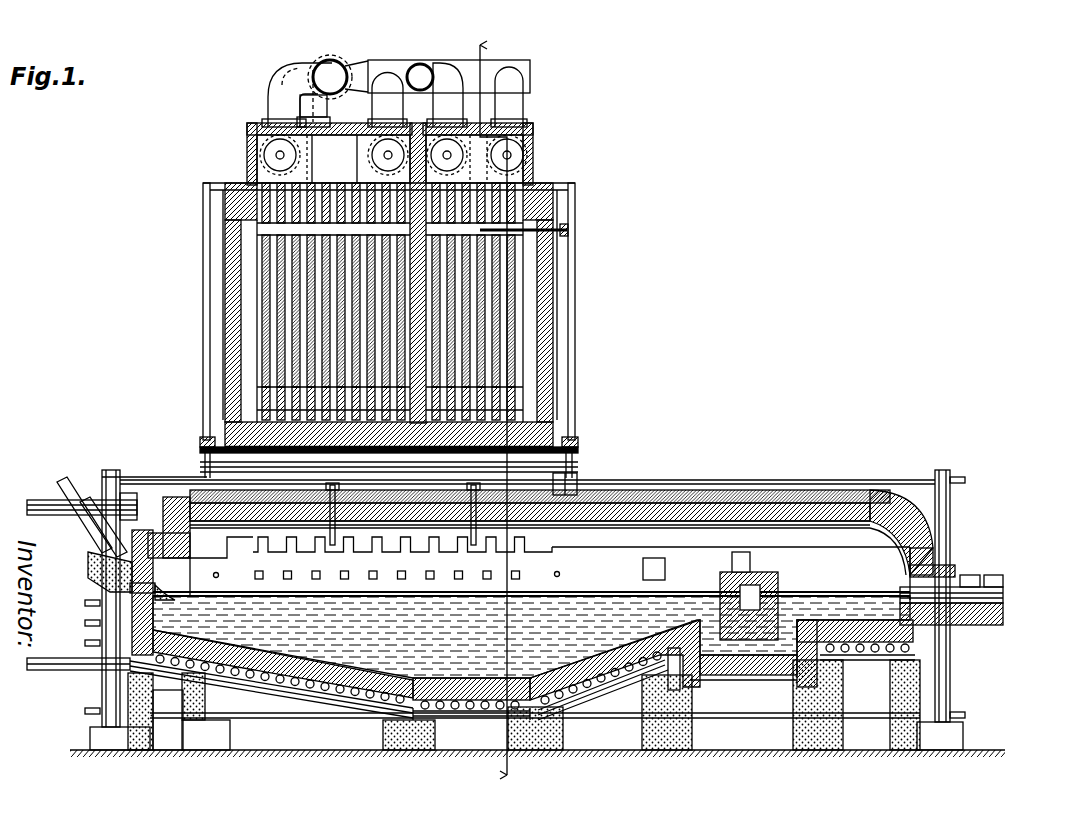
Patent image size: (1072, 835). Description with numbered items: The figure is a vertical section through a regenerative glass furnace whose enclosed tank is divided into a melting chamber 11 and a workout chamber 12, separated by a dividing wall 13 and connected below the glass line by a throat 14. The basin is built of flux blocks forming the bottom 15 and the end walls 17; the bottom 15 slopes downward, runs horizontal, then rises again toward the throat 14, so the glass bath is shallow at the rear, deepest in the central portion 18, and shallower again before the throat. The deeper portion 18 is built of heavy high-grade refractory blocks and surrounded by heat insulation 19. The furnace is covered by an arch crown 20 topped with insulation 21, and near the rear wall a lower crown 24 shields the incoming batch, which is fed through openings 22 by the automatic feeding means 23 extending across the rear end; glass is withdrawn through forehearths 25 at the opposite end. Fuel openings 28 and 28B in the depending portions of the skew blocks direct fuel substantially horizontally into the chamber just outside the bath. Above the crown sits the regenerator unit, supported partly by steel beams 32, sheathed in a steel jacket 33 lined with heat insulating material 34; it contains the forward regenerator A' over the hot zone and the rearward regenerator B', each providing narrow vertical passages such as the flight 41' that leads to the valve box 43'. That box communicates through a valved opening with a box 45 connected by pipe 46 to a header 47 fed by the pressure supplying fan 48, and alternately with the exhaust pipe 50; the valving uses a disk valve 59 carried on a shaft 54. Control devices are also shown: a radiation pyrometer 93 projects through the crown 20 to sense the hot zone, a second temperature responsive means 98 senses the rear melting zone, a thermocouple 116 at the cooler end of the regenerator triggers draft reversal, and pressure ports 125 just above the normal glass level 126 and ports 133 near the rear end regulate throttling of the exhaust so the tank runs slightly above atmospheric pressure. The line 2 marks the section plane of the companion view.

The melting chamber 11 is at (612, 552).
The workout chamber 12 is at (840, 553).
The dividing wall 13 is at (778, 590).
The throat 14 is at (748, 656).
The bottom 15 is at (318, 683).
The end walls 17 is at (120, 607).
The deeper portion of the glass containing basin 18 is at (532, 653).
The heat insulation 19 is at (450, 700).
The arch roof or crown 20 is at (577, 516).
The insulation 21 is at (578, 487).
The slots or openings 22 is at (190, 574).
The automatic feeding means 23 is at (76, 559).
The crown 24 is at (188, 560).
The forehearths 25 is at (1003, 587).
The fuel openings 28 is at (515, 580).
The fuel openings 28B is at (373, 580).
The beams 32 is at (512, 455).
The steel jacket 33 is at (553, 360).
The heat insulating material 34 is at (555, 258).
The flight 41' is at (527, 311).
The valve box 43' is at (408, 259).
The box 45 is at (515, 172).
The pipe 46 is at (510, 85).
The header 47 is at (462, 62).
The pressure supplying fan 48 is at (320, 70).
The pipe 50 is at (416, 66).
The shaft 54 is at (511, 158).
The plate or disk valve 59 is at (513, 148).
The radiation pyrometer 93 is at (403, 538).
The temperature responsive means 98 is at (330, 530).
The thermocouple 116 is at (570, 226).
The ports 125 is at (555, 576).
The normal glass level 126 is at (685, 596).
The ports 133 is at (178, 586).
The regenerator A' is at (517, 301).
The regenerator B' is at (276, 302).
The section line 2 is at (503, 410).